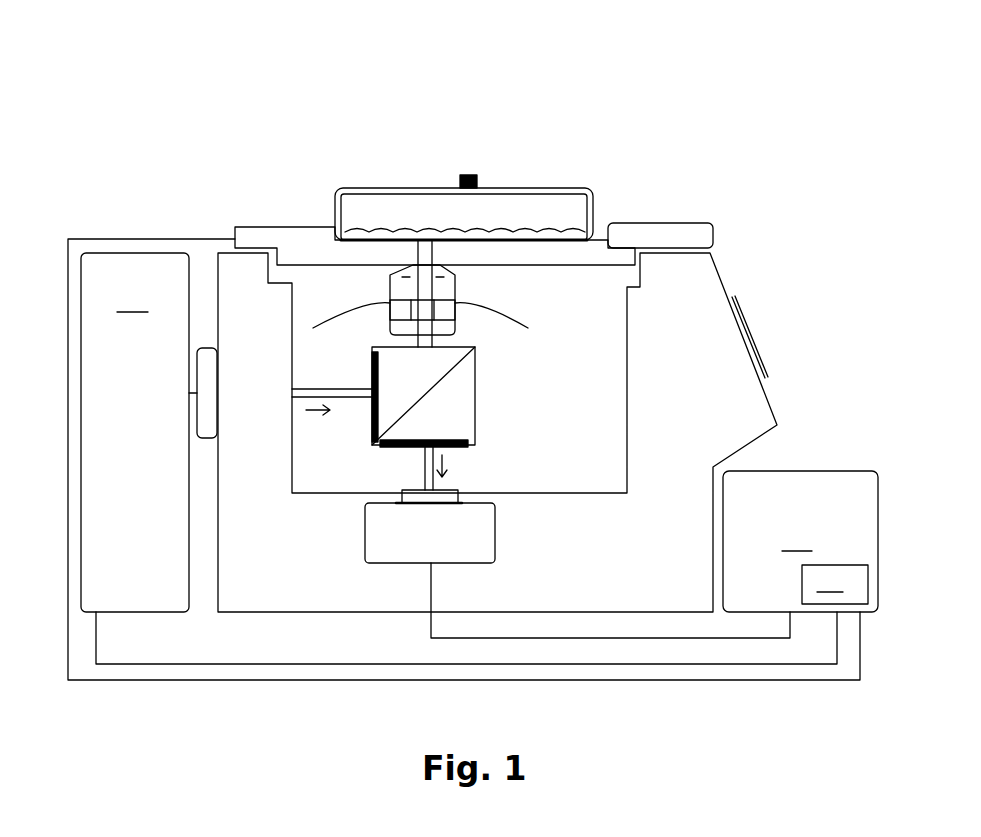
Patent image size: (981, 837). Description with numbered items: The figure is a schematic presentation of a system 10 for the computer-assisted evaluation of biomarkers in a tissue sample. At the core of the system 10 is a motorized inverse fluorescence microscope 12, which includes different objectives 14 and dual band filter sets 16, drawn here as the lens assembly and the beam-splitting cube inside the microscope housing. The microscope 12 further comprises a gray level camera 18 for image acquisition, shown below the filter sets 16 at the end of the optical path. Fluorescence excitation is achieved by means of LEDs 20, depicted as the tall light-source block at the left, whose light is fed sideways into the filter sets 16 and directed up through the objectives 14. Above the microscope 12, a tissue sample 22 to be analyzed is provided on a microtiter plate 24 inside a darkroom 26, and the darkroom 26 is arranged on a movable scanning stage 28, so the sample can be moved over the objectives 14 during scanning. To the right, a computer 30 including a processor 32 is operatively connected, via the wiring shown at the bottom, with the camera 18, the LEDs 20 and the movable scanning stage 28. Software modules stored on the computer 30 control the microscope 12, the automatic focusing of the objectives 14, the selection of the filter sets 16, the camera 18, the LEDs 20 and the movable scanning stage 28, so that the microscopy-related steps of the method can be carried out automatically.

The system 10 is at (470, 97).
The motorized inverse fluorescence microscope 12 is at (718, 360).
The objectives 14 is at (455, 328).
The dual band filter sets 16 is at (450, 397).
The gray level camera 18 is at (475, 527).
The LEDs 20 is at (149, 432).
The tissue sample 22 is at (550, 230).
The microtiter plate 24 is at (332, 228).
The darkroom 26 is at (395, 205).
The movable scanning stage 28 is at (668, 232).
The computer 30 is at (800, 541).
The processor 32 is at (835, 584).